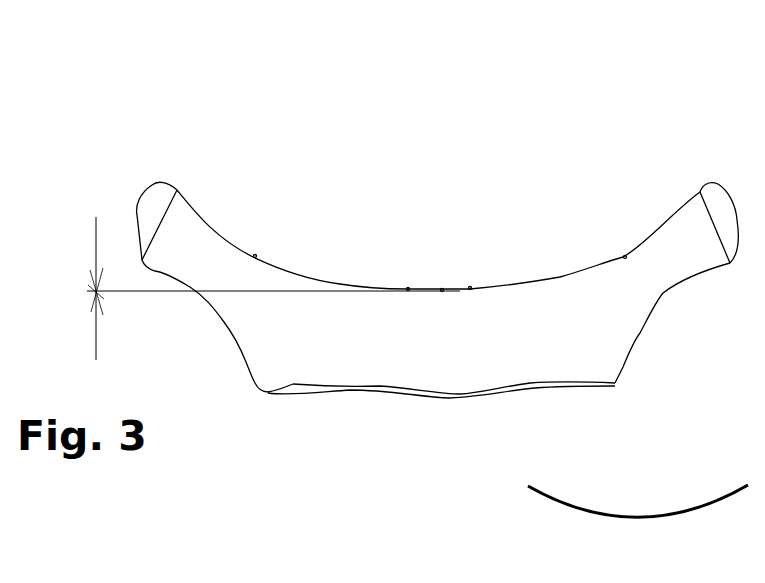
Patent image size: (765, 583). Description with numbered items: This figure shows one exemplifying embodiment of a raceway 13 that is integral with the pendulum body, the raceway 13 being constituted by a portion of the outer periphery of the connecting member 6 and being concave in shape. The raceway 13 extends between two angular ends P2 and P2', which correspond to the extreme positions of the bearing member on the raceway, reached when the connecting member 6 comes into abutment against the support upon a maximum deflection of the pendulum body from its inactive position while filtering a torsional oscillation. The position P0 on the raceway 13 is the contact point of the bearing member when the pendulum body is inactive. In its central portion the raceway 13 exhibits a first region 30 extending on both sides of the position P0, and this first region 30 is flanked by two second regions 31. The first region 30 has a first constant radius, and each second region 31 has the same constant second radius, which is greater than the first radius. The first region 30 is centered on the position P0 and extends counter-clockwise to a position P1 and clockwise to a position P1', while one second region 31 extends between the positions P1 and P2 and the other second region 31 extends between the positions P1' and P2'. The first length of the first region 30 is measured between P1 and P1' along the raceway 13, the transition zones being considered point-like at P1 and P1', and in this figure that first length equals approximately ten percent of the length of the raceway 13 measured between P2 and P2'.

The connecting member 6 is at (385, 363).
The first region 30 is at (452, 290).
The second region 31 is at (323, 277).
The raceway 13 is at (638, 520).
The position P0 is at (442, 290).
The position P1 is at (366, 187).
The angular end P2 is at (203, 180).
The position P1' is at (581, 152).
The angular end P2' is at (671, 190).